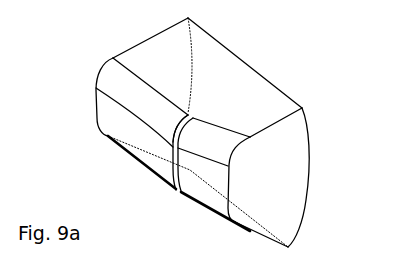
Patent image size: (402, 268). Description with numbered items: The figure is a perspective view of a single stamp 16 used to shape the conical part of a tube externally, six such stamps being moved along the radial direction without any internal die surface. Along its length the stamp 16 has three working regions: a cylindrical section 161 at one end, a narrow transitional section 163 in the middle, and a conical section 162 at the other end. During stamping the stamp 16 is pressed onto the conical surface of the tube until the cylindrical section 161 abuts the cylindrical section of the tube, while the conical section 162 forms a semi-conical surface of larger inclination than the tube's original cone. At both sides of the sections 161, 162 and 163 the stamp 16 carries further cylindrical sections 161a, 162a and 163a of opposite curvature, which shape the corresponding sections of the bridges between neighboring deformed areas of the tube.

The stamp 16 is at (204, 137).
The cylindrical section 161 is at (110, 103).
The cylindrical section 161a is at (95, 110).
The conical section 162 is at (225, 155).
The cylindrical section 162a is at (210, 138).
The transitional section 163 is at (173, 110).
The cylindrical section 163a is at (201, 108).